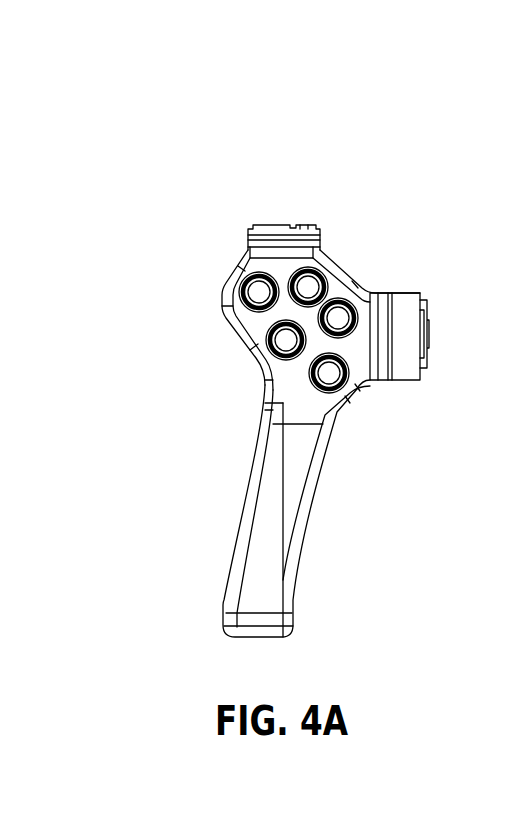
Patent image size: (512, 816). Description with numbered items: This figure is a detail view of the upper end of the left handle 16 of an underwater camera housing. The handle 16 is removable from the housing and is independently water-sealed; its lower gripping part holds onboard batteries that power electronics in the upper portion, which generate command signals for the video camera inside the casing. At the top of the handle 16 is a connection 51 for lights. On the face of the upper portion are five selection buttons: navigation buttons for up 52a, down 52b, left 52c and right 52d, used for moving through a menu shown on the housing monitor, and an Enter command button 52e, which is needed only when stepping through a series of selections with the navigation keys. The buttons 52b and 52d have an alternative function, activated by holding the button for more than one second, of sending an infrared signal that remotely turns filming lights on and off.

The left handle 16 is at (250, 473).
The connections for lights 51 is at (287, 248).
The up navigation button 52a is at (308, 287).
The down navigation button 52b is at (329, 373).
The left navigation button 52c is at (286, 340).
The right navigation button 52d is at (338, 318).
The Enter command button 52e is at (259, 292).